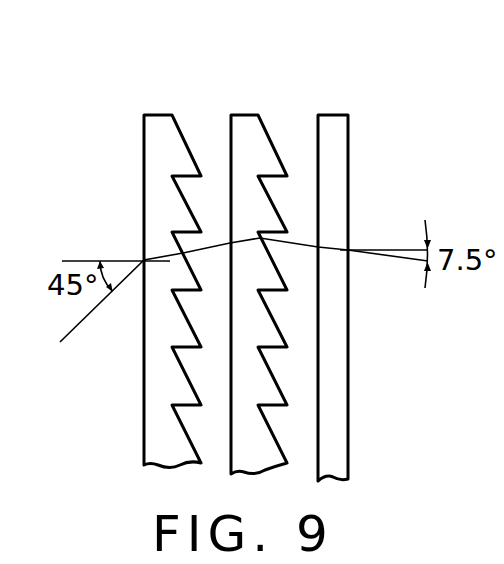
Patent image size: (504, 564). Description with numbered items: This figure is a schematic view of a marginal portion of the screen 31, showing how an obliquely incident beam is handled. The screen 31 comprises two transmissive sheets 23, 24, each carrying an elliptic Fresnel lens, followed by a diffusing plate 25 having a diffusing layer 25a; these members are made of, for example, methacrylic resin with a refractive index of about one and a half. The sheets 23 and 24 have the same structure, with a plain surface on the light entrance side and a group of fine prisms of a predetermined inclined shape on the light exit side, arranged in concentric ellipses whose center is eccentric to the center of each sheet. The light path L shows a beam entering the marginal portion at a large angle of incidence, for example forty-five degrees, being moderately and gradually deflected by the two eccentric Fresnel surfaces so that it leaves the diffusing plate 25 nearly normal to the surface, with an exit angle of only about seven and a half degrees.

The screen 31 is at (130, 51).
The transmissive sheet 23 is at (170, 263).
The transmissive sheet 24 is at (257, 266).
The diffusing layer 25a is at (372, 269).
The diffusing plate 25 is at (374, 269).
The light path L is at (236, 290).